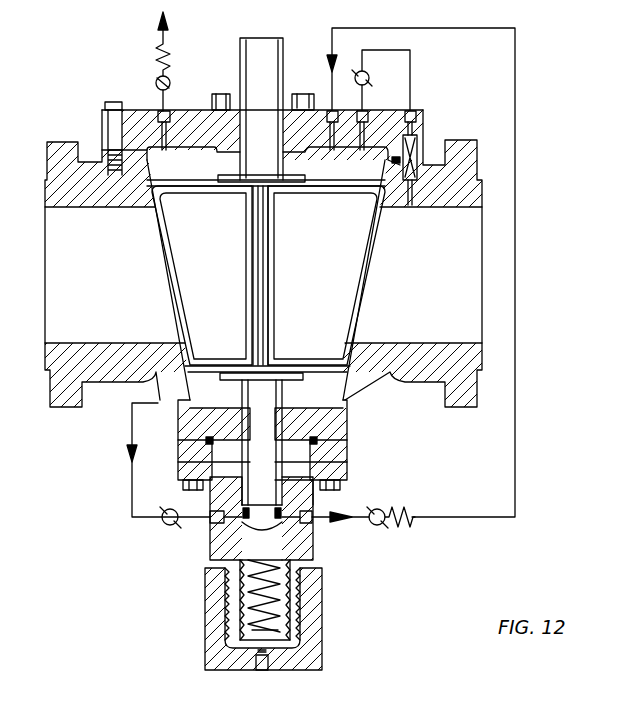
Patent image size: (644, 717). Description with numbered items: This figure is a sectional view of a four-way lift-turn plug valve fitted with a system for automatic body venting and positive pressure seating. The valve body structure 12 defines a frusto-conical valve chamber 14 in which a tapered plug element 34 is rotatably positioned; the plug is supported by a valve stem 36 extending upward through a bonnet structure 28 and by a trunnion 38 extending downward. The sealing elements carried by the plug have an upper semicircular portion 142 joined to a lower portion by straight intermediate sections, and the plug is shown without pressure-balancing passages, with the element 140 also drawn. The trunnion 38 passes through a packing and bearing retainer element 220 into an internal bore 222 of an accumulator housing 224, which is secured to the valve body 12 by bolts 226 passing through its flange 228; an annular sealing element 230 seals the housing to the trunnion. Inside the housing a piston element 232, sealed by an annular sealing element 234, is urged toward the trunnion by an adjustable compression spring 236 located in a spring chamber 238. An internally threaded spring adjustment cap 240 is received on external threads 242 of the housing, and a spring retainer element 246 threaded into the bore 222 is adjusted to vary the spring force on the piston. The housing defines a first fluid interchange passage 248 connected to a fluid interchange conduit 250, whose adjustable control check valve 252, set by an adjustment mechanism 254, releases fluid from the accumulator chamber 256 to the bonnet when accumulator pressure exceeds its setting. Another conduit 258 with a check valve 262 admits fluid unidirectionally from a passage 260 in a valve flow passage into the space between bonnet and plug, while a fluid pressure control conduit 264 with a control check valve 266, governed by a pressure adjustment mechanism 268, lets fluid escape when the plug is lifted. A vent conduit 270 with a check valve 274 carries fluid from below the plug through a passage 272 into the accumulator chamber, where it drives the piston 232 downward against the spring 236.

The valve body structure 12 is at (358, 428).
The valve chamber 14 is at (350, 396).
The bonnet structure 28 is at (138, 110).
The plug element 34 is at (246, 225).
The valve stem 36 is at (258, 50).
The trunnion 38 is at (267, 408).
The chamber 140 is at (310, 200).
The upper semicircular portion 142 is at (212, 200).
The packing and bearing retainer element 220 is at (340, 450).
The internal bore 222 is at (313, 556).
The accumulator housing 224 is at (305, 504).
The bolts 226 is at (183, 483).
The flange 228 is at (345, 471).
The annular sealing element 230 is at (230, 478).
The piston element 232 is at (242, 535).
The annular sealing element 234 is at (242, 545).
The adjustable compression spring 236 is at (250, 575).
The spring chamber 238 is at (228, 600).
The spring adjustment cap 240 is at (312, 640).
The external threads 242 is at (310, 608).
The spring retainer element 246 is at (255, 655).
The first fluid interchange passage 248 is at (305, 525).
The fluid interchange conduit 250 is at (517, 248).
The adjustable control check valve 252 is at (385, 527).
The adjustment mechanism 254 is at (405, 510).
The accumulator chamber 256 is at (292, 585).
The conduit 258 is at (412, 97).
The passage 260 is at (426, 200).
The check valve 262 is at (370, 72).
The fluid pressure control conduit 264 is at (168, 103).
The control check valve 266 is at (168, 97).
The pressure adjustment mechanism 268 is at (155, 70).
The vent conduit 270 is at (132, 438).
The passage 272 is at (220, 530).
The check valve 274 is at (162, 512).